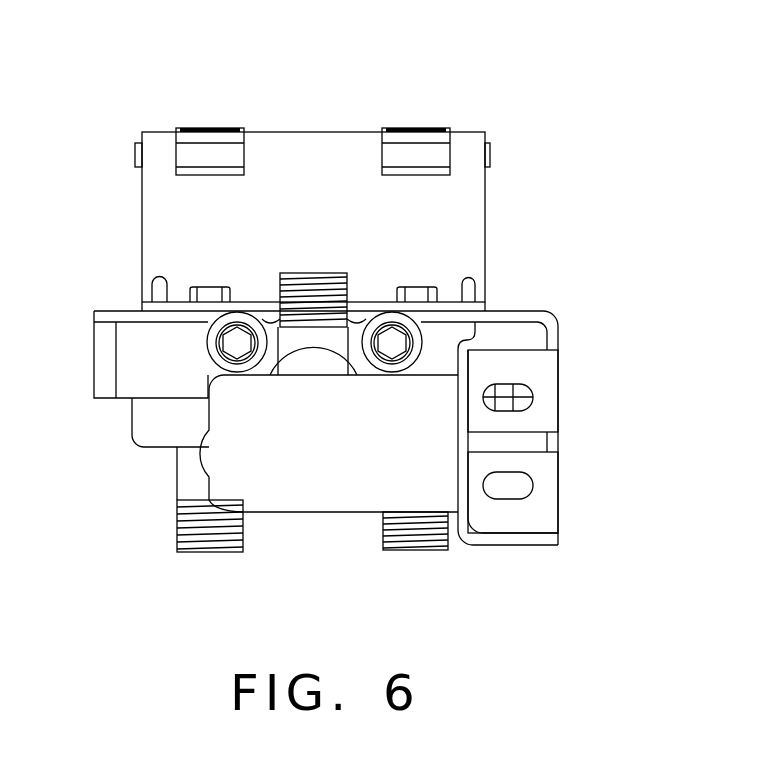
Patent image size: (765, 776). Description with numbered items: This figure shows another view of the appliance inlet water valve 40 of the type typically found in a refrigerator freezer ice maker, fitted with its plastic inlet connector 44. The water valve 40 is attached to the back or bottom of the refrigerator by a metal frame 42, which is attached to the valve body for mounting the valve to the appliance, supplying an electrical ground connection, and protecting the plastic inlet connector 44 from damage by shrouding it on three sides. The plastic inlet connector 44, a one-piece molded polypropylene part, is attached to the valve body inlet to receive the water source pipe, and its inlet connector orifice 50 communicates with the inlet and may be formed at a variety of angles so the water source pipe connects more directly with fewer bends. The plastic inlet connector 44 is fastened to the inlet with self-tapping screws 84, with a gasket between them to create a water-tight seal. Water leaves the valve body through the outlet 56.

The appliance inlet water valve 40 is at (320, 94).
The metal frame 42 is at (558, 377).
The plastic inlet connector 44 is at (317, 360).
The inlet connector orifice 50 is at (313, 272).
The outlet 56 is at (210, 552).
The self-tapping screws 84 is at (237, 343).